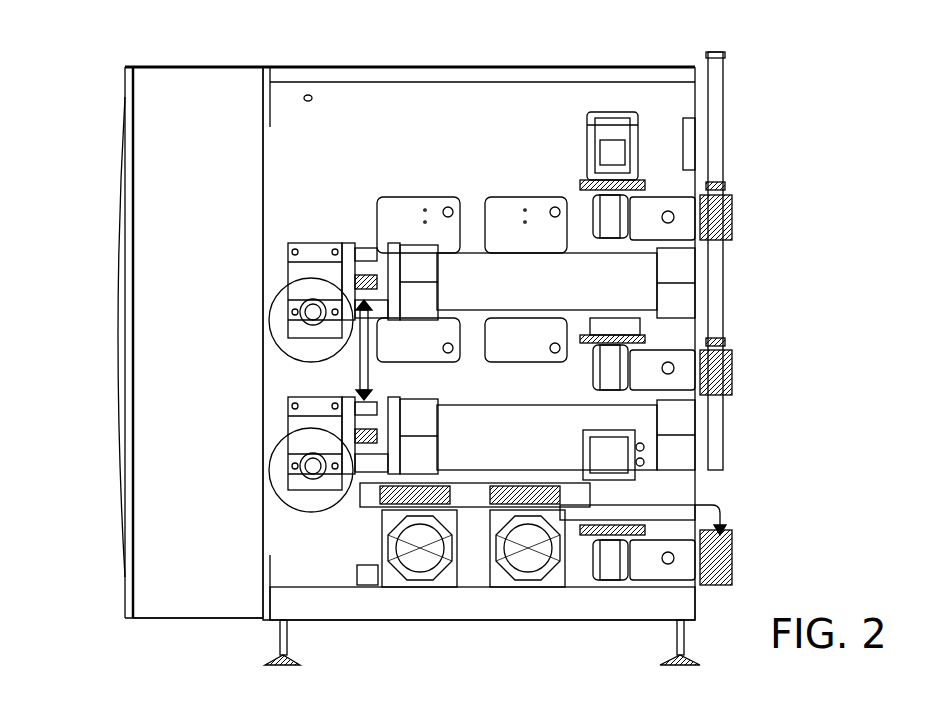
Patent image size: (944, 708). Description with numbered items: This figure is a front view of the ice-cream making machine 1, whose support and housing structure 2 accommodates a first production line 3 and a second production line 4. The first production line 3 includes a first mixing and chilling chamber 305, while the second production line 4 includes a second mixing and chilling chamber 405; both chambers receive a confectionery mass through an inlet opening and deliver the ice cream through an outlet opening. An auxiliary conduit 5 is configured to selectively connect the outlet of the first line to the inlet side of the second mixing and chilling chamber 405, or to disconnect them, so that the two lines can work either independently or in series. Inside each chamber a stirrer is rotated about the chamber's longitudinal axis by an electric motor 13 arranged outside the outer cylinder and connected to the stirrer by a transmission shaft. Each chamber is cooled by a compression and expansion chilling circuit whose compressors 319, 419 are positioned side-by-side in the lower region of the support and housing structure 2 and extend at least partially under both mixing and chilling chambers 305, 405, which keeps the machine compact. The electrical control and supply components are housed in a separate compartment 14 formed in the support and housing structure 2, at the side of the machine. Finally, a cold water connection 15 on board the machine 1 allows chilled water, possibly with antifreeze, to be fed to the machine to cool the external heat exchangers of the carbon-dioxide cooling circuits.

The ice-cream making machine 1 is at (108, 272).
The support and housing structure 2 is at (370, 80).
The first production line 3 is at (305, 386).
The second production line 4 is at (305, 233).
The auxiliary conduit 5 is at (470, 265).
The electric motor 13 is at (285, 308).
The separate compartment 14 is at (193, 95).
The cold water connection 15 is at (357, 575).
The first mixing and chilling chamber 305 is at (493, 422).
The compressor 319 is at (530, 555).
The second mixing and chilling chamber 405 is at (517, 270).
The compressor 419 is at (410, 548).